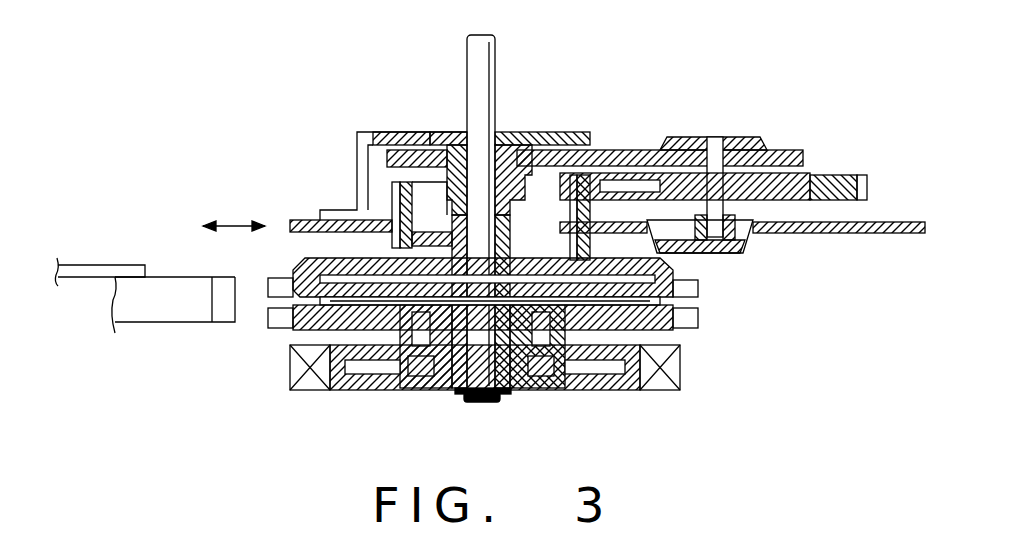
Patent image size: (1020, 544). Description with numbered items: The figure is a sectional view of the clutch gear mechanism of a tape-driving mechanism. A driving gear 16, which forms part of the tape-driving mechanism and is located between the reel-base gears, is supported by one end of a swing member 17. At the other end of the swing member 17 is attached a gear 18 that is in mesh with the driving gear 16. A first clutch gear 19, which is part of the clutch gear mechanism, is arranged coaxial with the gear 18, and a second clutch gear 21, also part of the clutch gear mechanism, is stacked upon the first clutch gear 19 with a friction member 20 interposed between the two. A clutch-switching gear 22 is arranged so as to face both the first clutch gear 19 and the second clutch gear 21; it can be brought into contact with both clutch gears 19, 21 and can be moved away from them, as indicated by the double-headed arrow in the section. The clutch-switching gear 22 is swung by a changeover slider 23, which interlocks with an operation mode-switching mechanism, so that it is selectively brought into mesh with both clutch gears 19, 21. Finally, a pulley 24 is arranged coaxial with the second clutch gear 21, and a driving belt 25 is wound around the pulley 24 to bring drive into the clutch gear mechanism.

The driving gear 16 is at (840, 190).
The swing member 17 is at (614, 150).
The gear 18 is at (392, 198).
The first clutch gear 19 is at (697, 283).
The friction member 20 is at (660, 302).
The second clutch gear 21 is at (697, 330).
The clutch-switching gear 22 is at (178, 277).
The changeover slider 23 is at (90, 265).
The pulley 24 is at (306, 390).
The driving belt 25 is at (288, 363).